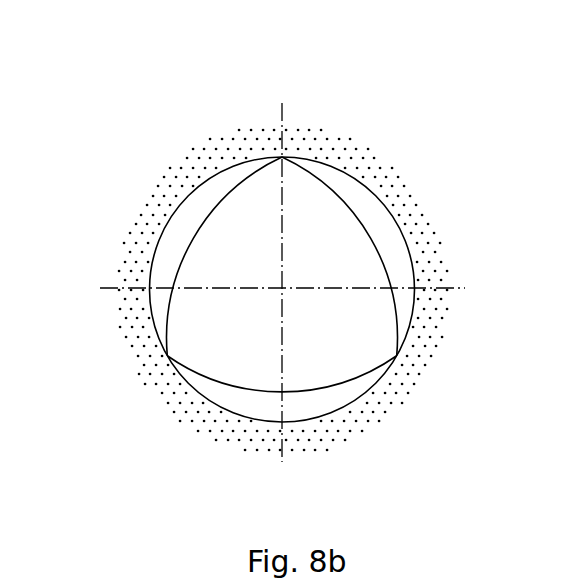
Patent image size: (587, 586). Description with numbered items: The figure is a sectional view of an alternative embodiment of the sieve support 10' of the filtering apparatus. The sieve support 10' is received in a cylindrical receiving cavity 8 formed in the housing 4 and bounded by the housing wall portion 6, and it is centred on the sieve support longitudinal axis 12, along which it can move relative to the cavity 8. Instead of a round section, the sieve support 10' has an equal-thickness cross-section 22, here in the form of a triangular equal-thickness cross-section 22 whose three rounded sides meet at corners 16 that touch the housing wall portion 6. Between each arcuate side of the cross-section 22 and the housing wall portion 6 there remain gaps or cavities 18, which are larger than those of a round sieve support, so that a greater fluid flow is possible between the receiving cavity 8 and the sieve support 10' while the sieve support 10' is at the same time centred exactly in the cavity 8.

The housing 4 is at (375, 170).
The housing wall portion 6 is at (397, 194).
The receiving cavity 8 is at (433, 311).
The sieve support 10' is at (341, 256).
The sieve support longitudinal axis 12 is at (282, 288).
The corner / vertex 16 is at (289, 146).
The gaps or cavities 18 is at (187, 230).
The equal-thickness cross-section 22 is at (230, 392).